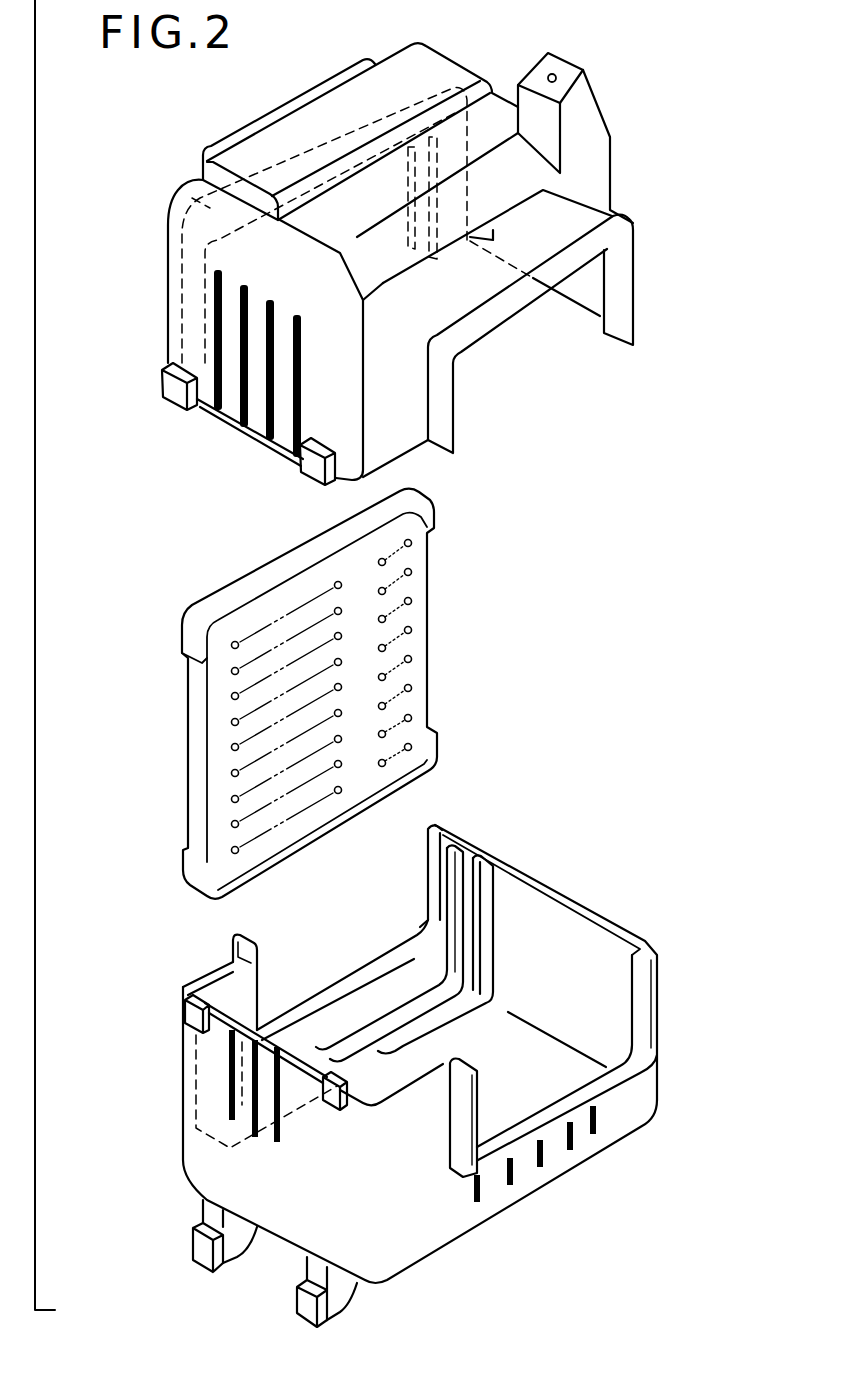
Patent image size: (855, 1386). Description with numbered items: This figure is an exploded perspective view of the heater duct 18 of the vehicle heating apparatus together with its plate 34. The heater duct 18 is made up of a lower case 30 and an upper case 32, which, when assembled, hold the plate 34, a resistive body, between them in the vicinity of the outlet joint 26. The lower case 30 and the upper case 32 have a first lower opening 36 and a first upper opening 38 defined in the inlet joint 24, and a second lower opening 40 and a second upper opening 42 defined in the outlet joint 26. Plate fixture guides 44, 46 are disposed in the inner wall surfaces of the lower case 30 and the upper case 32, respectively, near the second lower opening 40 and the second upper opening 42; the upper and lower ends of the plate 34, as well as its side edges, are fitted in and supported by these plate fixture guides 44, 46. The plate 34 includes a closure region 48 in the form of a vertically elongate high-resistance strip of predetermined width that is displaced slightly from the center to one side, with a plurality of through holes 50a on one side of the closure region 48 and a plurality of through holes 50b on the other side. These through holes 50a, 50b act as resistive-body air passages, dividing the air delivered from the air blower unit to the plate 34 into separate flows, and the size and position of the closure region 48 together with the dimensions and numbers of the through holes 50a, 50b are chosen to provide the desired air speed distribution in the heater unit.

The heater duct 18 is at (704, 172).
The inlet joint 24 is at (667, 978).
The outlet joint 26 is at (222, 932).
The lower case 30 is at (610, 910).
The upper case 32 is at (470, 69).
The plate 34 is at (437, 633).
The first lower opening 36 is at (645, 1030).
The first upper opening 38 is at (623, 304).
The second lower opening 40 is at (428, 877).
The second upper opening 42 is at (190, 193).
The plate fixture guide 44 is at (487, 880).
The plate fixture guide 46 is at (455, 207).
The closure region 48 is at (369, 768).
The through holes 50a is at (232, 725).
The through holes 50b is at (411, 684).